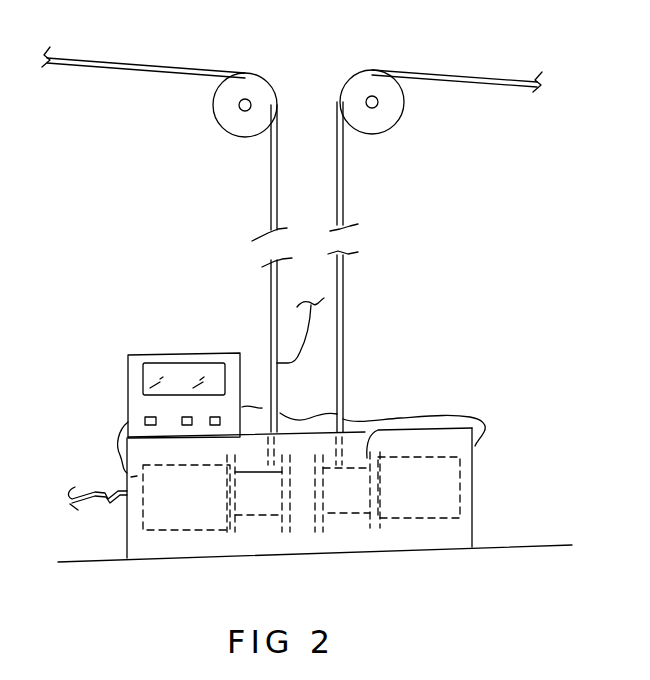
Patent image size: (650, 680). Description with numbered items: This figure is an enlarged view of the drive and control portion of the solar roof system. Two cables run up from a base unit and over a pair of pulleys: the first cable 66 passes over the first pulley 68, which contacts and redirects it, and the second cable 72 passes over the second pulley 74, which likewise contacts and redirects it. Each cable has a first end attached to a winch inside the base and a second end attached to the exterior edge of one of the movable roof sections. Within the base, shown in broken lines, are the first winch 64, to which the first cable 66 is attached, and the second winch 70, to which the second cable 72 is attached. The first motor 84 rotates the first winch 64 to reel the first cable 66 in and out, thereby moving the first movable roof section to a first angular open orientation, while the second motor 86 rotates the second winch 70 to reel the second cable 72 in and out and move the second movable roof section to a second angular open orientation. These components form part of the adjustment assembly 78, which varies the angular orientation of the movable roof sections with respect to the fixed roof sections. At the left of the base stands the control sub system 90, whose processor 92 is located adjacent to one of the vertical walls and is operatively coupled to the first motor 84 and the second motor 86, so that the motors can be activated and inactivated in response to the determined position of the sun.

The first winch 64 is at (253, 513).
The first cable 66 is at (270, 185).
The first pulley 68 is at (223, 132).
The second winch 70 is at (350, 508).
The second cable 72 is at (475, 77).
The second pulley 74 is at (390, 117).
The adjustment assembly 78 is at (367, 447).
The first motor 84 is at (170, 522).
The second motor 86 is at (430, 512).
The control sub system 90 is at (263, 363).
The processor 92 is at (143, 392).